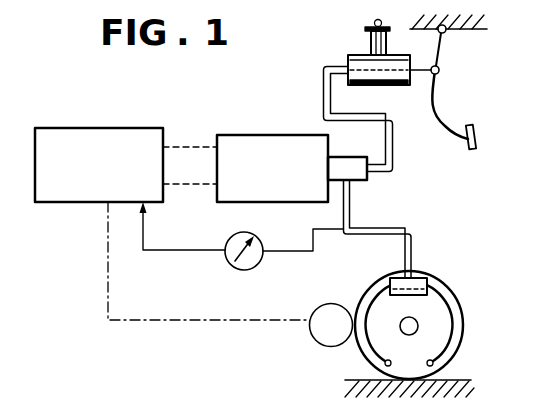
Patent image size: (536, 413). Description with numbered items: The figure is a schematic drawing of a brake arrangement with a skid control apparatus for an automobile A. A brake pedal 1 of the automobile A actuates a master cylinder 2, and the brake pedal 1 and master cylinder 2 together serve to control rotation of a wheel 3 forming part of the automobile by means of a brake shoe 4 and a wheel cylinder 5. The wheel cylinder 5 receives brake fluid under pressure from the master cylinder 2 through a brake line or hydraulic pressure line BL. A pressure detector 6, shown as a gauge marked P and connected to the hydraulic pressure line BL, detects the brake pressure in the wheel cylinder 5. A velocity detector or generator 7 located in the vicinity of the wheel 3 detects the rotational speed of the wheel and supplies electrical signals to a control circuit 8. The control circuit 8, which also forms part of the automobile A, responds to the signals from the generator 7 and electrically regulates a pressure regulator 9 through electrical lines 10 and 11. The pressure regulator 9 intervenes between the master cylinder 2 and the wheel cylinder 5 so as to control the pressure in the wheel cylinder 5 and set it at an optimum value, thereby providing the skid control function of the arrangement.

The brake pedal 1 is at (433, 92).
The master cylinder 2 is at (355, 54).
The wheel 3 is at (463, 301).
The brake shoe 4 is at (452, 338).
The wheel cylinder 5 is at (391, 277).
The pressure detector 6 is at (258, 236).
The velocity detector or generator 7 is at (313, 309).
The control circuit 8 is at (69, 128).
The pressure regulator 9 is at (242, 135).
The electrical line 10 is at (200, 146).
The electrical line 11 is at (185, 186).
The brake line or hydraulic pressure line BL is at (355, 203).
The automobile A is at (498, 75).
The pressure P is at (270, 265).